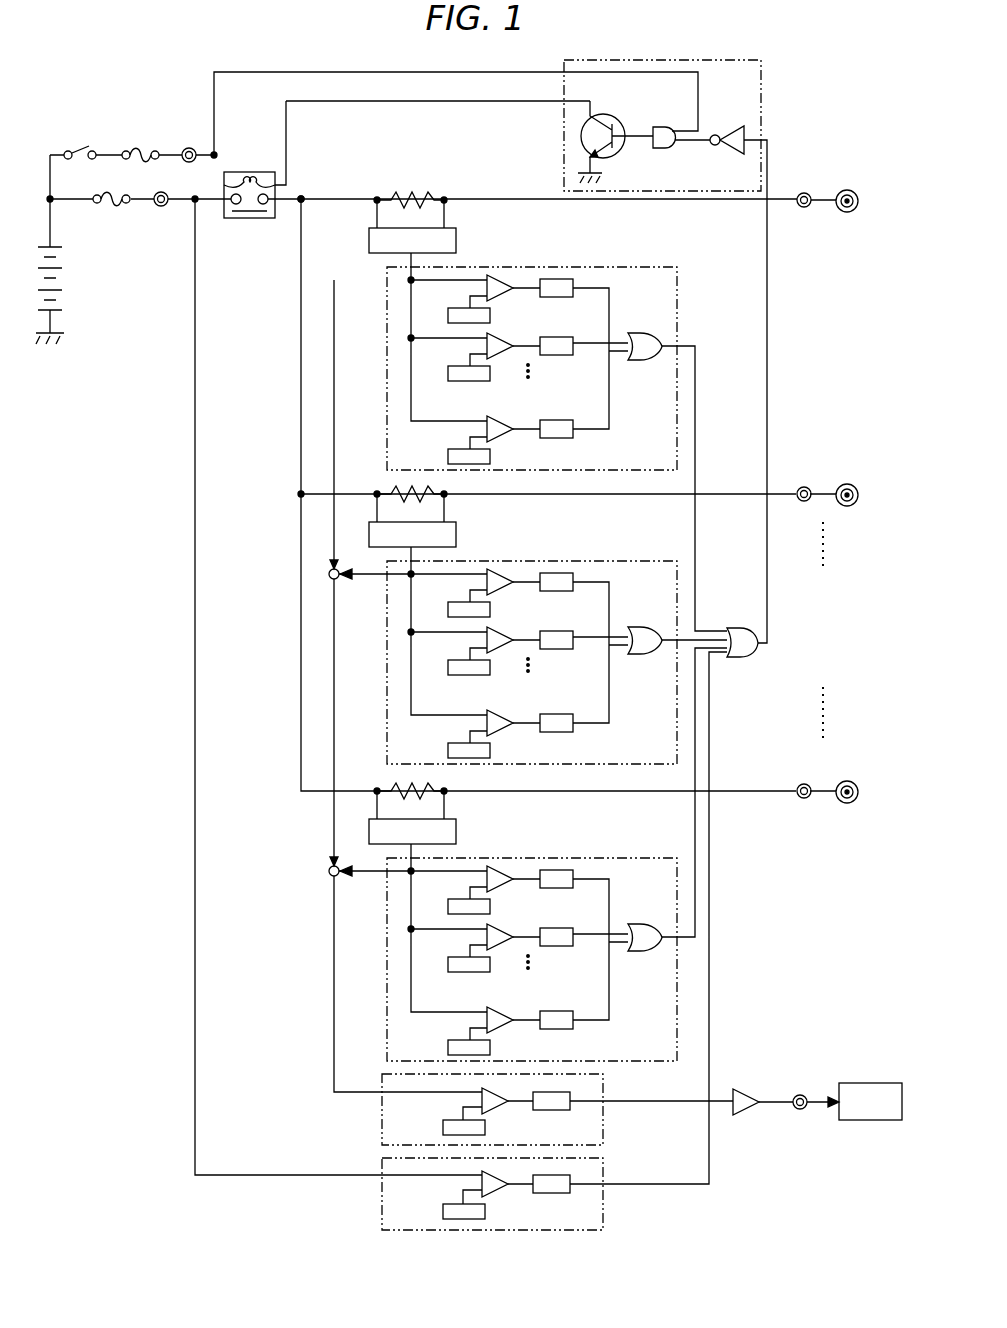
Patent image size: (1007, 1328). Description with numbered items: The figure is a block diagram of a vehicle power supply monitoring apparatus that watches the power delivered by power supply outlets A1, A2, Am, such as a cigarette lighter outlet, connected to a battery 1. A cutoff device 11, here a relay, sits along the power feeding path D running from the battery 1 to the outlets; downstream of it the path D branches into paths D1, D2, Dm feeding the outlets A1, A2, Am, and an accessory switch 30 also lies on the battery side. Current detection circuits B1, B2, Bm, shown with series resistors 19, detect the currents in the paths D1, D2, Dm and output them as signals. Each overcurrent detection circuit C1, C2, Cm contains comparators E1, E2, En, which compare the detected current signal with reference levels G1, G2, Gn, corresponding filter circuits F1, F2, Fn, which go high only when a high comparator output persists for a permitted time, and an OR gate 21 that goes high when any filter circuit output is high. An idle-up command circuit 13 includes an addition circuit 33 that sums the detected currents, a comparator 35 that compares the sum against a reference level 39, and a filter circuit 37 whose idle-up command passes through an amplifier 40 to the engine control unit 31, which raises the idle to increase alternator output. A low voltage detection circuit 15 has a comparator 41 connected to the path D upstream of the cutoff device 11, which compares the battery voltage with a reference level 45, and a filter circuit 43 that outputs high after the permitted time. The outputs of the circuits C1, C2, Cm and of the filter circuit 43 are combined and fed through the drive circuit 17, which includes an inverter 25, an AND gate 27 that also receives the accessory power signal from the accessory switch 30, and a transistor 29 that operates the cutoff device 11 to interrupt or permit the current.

The battery 1 is at (70, 277).
The cutoff device 11 is at (244, 172).
The idle-up command circuit 13 is at (605, 1086).
The low voltage detection circuit 15 is at (605, 1170).
The drive circuit 17 is at (763, 90).
The resistor 19 is at (410, 197).
The OR gate 21 is at (636, 333).
The inverter 25 is at (735, 128).
The AND gate 27 is at (665, 127).
The transistor 29 is at (620, 116).
The accessory switch 30 is at (85, 150).
The engine control unit 31 is at (876, 1083).
The addition circuit 33 is at (331, 580).
The comparator 35 is at (493, 1112).
The filter circuit 37 is at (553, 1111).
The reference level 39 is at (443, 1128).
The amplifier 40 is at (750, 1090).
The comparator 41 is at (493, 1195).
The filter circuit 43 is at (553, 1194).
The reference level 45 is at (443, 1212).
The power feeding path D is at (301, 196).
The path D1 is at (790, 197).
The path D2 is at (790, 491).
The path Dm is at (790, 788).
The power supply outlet A1 is at (848, 190).
The power supply outlet A2 is at (847, 484).
The power supply outlet Am is at (847, 781).
The current detection circuit B1 is at (460, 250).
The current detection circuit B2 is at (460, 544).
The current detection circuit Bm is at (460, 841).
The overcurrent detection circuit C1 is at (640, 266).
The overcurrent detection circuit C2 is at (640, 560).
The overcurrent detection circuit Cm is at (640, 857).
The comparator E1 is at (494, 276).
The comparator E2 is at (496, 334).
The comparator En is at (494, 417).
The filter circuit F1 is at (552, 279).
The filter circuit F2 is at (556, 337).
The filter circuit Fn is at (552, 420).
The reference level G1 is at (448, 314).
The reference level G2 is at (448, 372).
The reference level Gn is at (448, 457).